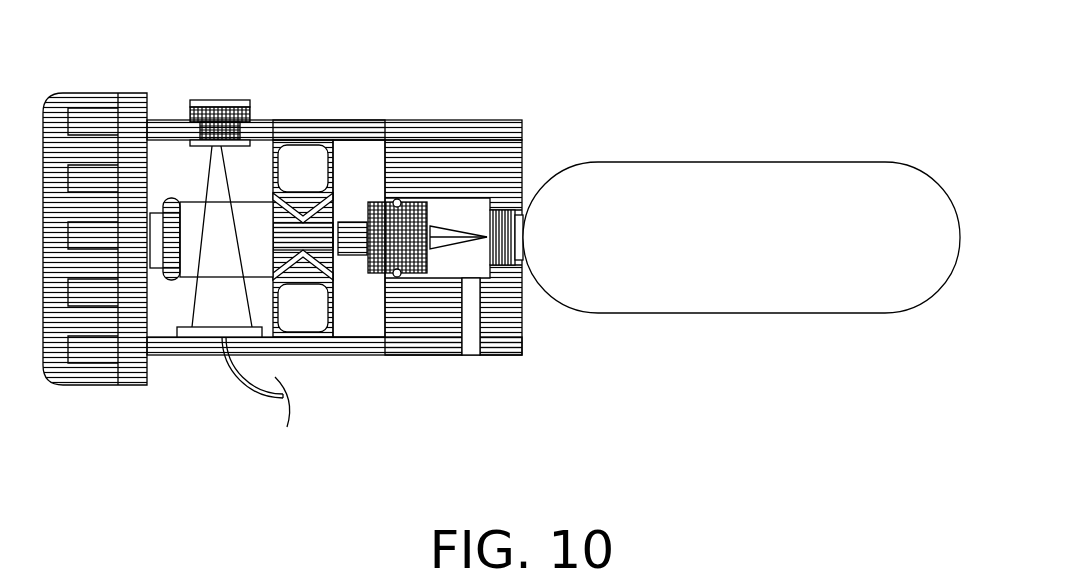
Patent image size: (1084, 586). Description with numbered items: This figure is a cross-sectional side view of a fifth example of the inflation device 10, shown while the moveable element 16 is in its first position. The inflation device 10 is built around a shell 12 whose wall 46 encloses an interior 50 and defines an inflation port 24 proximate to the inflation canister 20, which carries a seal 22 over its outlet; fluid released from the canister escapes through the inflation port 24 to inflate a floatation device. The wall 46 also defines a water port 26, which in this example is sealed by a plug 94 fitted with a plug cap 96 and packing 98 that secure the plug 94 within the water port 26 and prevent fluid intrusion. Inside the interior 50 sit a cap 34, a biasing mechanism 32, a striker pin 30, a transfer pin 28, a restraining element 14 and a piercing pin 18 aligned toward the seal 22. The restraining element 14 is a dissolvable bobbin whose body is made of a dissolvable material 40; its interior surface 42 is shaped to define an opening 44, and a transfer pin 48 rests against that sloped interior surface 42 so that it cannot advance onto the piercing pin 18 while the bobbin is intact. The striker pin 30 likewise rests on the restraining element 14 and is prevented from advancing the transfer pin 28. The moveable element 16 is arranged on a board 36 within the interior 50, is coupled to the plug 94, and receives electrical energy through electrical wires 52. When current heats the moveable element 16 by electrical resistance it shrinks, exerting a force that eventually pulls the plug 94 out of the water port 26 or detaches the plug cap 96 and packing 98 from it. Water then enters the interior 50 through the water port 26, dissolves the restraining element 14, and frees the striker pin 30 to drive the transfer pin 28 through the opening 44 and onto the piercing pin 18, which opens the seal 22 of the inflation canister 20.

The inflation device 10 is at (688, 75).
The shell 12 is at (412, 355).
The restraining element 14 is at (285, 122).
The moveable element 16 is at (192, 296).
The piercing pin 18 is at (412, 218).
The inflation canister 20 is at (735, 300).
The seal 22 is at (497, 213).
The inflation port 24 is at (472, 363).
The water port 26 is at (187, 118).
The transfer pin 28 is at (308, 248).
The striker pin 30 is at (243, 248).
The biasing mechanism 32 is at (168, 198).
The cap 34 is at (88, 93).
The board 36 is at (205, 340).
The material 40 is at (316, 318).
The interior surface 42 is at (316, 258).
The opening 44 is at (320, 216).
The wall 46 is at (323, 122).
The transfer pin 48 is at (298, 203).
The interior 50 is at (373, 323).
The electrical wires 52 is at (230, 380).
The plug 94 is at (240, 146).
The plug cap 96 is at (198, 102).
The packing 98 is at (235, 102).